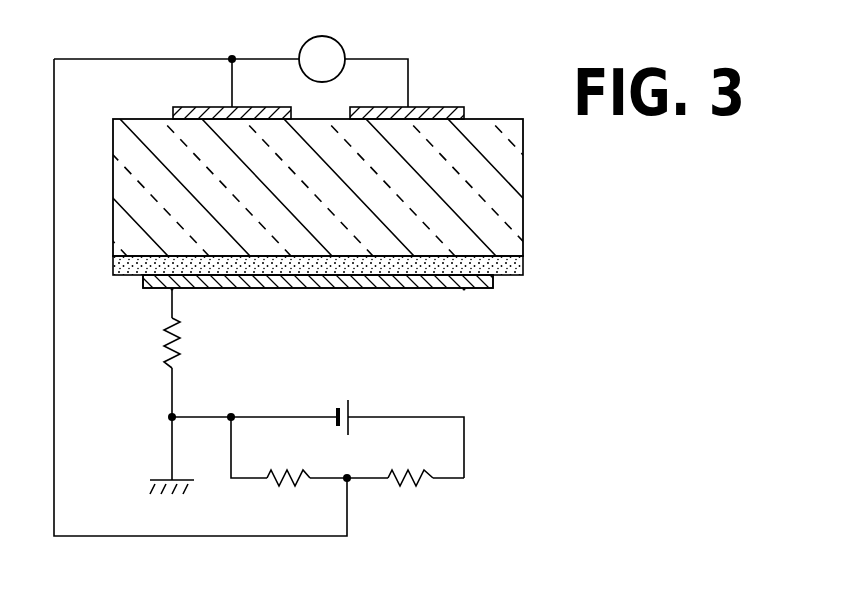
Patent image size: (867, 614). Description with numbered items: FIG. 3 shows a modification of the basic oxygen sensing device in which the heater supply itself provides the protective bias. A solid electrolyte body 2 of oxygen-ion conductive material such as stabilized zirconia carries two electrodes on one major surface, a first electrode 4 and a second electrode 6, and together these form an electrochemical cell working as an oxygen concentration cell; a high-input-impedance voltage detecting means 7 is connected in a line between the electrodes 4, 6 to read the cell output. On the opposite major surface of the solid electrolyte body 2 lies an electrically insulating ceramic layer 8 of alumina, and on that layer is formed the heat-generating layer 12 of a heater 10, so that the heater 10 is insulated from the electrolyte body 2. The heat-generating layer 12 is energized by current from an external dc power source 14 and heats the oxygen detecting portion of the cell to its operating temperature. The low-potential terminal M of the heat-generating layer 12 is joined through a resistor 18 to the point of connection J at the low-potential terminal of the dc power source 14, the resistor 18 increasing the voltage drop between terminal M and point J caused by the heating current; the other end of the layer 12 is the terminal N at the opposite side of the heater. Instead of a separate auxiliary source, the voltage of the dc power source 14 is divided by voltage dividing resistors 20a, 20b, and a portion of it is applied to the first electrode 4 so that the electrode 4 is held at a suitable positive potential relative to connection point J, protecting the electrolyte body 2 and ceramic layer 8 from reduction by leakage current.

The solid electrolyte body 2 is at (512, 172).
The first electrode 4 is at (185, 108).
The electrode 6 is at (447, 107).
The voltage detecting means 7 is at (340, 50).
The electrically insulating ceramic layer 8 is at (522, 263).
The heater 10 is at (477, 297).
The heat-generating layer 12 is at (312, 290).
The dc power source 14 is at (352, 393).
The resistor 18 is at (162, 349).
The voltage dividing resistor 20a is at (285, 482).
The voltage dividing resistor 20b is at (420, 483).
The low-potential terminal M is at (174, 291).
The terminal N is at (462, 292).
The point of connection J is at (231, 414).